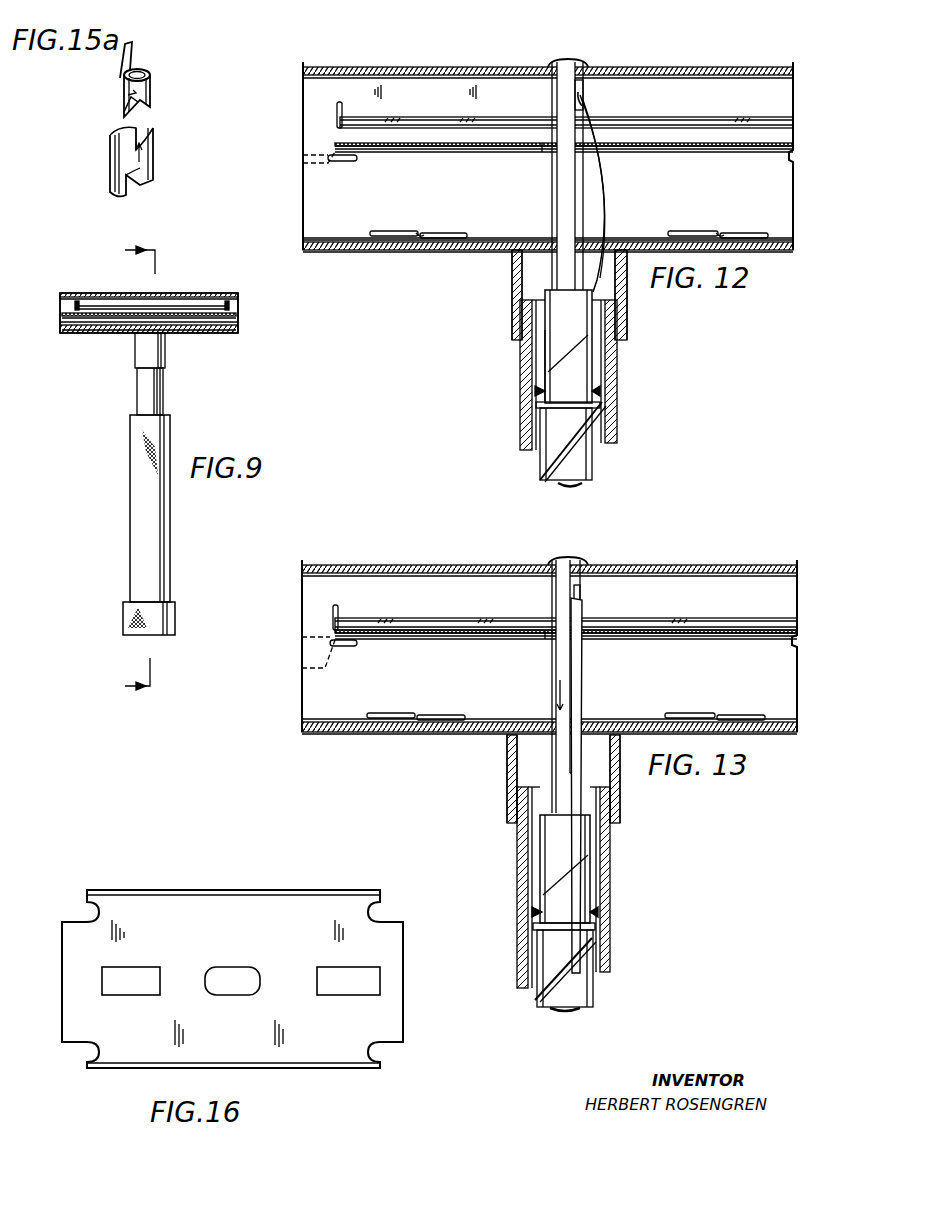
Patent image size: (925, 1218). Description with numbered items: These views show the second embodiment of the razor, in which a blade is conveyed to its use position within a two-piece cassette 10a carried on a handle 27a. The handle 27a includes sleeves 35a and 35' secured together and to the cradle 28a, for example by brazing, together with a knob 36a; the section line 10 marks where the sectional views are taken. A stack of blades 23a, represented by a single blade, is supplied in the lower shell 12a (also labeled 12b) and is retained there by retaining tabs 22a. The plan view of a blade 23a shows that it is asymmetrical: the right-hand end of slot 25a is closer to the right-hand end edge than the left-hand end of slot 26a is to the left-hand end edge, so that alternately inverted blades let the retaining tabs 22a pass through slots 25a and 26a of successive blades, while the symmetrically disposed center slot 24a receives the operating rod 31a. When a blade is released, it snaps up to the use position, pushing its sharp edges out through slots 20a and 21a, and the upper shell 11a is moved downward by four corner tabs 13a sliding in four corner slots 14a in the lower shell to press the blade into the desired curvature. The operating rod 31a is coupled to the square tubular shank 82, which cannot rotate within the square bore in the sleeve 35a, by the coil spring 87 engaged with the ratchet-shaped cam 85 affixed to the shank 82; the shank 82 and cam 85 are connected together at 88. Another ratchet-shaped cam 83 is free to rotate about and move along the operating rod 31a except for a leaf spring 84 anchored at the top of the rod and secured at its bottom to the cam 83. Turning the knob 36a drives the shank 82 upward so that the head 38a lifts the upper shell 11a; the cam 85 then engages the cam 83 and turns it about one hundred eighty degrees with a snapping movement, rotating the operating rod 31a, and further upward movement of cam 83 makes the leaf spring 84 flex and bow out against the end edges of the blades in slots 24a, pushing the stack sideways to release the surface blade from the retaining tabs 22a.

In FIG. 9, the section line 10 is at (126, 468).
In FIG. 9, the cassette 10a is at (222, 291).
In FIG. 12, the cassette 10a is at (294, 102).
In FIG. 13, the cassette 10a is at (292, 600).
In FIG. 9, the upper shell 11a is at (160, 293).
In FIG. 12, the upper shell 11a is at (373, 67).
In FIG. 13, the upper shell 11a is at (412, 565).
In FIG. 9, the lower shell 12a is at (238, 329).
In FIG. 12, the lower shell 12a is at (303, 246).
In FIG. 13, the base plate 12b is at (302, 727).
In FIG. 9, the corner tabs 13a is at (238, 315).
In FIG. 12, the corner tabs 13a is at (320, 147).
In FIG. 13, the corner tabs 13a is at (330, 637).
In FIG. 12, the corner slots 14a is at (350, 162).
In FIG. 13, the corner slots 14a is at (352, 648).
In FIG. 9, the slot 20a is at (215, 307).
In FIG. 12, the slot 21a is at (700, 131).
In FIG. 13, the slot 21a is at (565, 617).
In FIG. 12, the retaining tabs 22a is at (394, 231).
In FIG. 13, the retaining tabs 22a is at (392, 713).
In FIG. 12, the blade 23a is at (493, 153).
In FIG. 13, the blade 23a is at (500, 636).
In FIG. 16, the blade 23a is at (236, 890).
In FIG. 12, the center slot 24a is at (546, 153).
In FIG. 13, the center slot 24a is at (548, 640).
In FIG. 16, the center slot 24a is at (238, 967).
In FIG. 16, the slot 25a is at (355, 967).
In FIG. 16, the slot 26a is at (135, 995).
In FIG. 9, the handle 27a is at (180, 452).
In FIG. 12, the handle 27a is at (630, 358).
In FIG. 13, the handle 27a is at (670, 891).
In FIG. 9, the cradle 28a is at (200, 334).
In FIG. 12, the cradle 28a is at (376, 252).
In FIG. 13, the cradle 28a is at (418, 734).
In FIG. 12, the operating rod 31a is at (585, 97).
In FIG. 13, the operating rod 31a is at (582, 598).
In FIG. 9, the sleeve 35' is at (131, 350).
In FIG. 12, the sleeve 35' is at (544, 295).
In FIG. 13, the sleeve 35' is at (537, 779).
In FIG. 9, the sleeve 35a is at (163, 397).
In FIG. 12, the sleeve 35a is at (618, 425).
In FIG. 13, the sleeve 35a is at (612, 978).
In FIG. 9, the knob 36a is at (175, 618).
In FIG. 12, the head 38a is at (580, 62).
In FIG. 13, the head 38a is at (576, 560).
In FIG. 12, the tubular shank 82 is at (600, 405).
In FIG. 13, the tubular shank 82 is at (598, 940).
In FIG. 15A, the cam member 83 is at (150, 85).
In FIG. 12, the cam member 83 is at (592, 324).
In FIG. 13, the cam member 83 is at (590, 844).
In FIG. 12, the leaf spring 84 is at (610, 196).
In FIG. 13, the leaf spring 84 is at (584, 696).
In FIG. 15A, the cam member 85 is at (153, 154).
In FIG. 12, the cam member 85 is at (588, 372).
In FIG. 13, the cam member 85 is at (588, 876).
In FIG. 12, the coil spring 87 is at (540, 476).
In FIG. 13, the coil spring 87 is at (540, 1002).
In FIG. 12, the connection 88 is at (534, 391).
In FIG. 13, the connection 88 is at (531, 912).